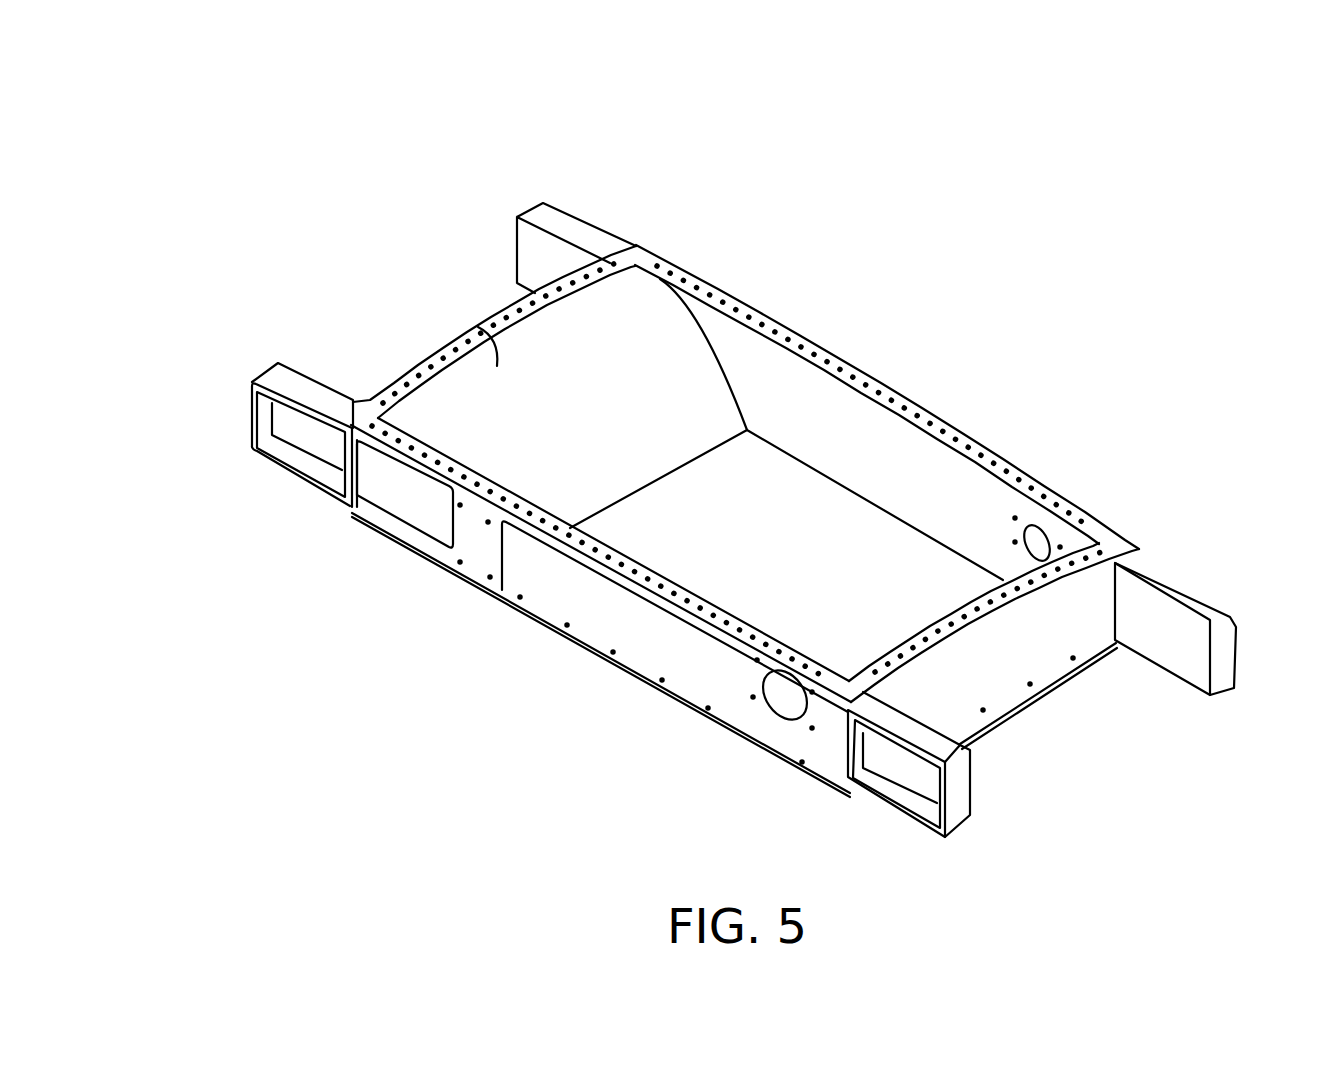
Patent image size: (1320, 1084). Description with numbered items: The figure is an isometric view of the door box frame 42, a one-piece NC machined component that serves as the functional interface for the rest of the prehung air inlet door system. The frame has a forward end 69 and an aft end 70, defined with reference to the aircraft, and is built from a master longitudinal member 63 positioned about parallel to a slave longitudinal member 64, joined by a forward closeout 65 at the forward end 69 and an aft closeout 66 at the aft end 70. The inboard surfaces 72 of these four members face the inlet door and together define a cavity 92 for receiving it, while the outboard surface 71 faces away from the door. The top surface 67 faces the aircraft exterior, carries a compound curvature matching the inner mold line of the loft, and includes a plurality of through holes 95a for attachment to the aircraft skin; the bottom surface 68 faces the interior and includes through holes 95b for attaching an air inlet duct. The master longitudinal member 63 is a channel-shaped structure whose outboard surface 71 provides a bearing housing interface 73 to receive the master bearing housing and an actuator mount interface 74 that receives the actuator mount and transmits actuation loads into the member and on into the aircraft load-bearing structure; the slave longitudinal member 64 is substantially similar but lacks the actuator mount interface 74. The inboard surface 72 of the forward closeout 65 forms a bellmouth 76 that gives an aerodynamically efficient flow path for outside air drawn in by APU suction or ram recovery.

The door box frame 42 is at (257, 212).
The master longitudinal member 63 is at (601, 607).
The slave longitudinal member 64 is at (854, 439).
The forward closeout 65 is at (494, 332).
The aft closeout 66 is at (994, 665).
The top surface 67 is at (923, 418).
The bottom surface 68 is at (1000, 723).
The forward end 69 is at (250, 413).
The aft end 70 is at (1227, 667).
The outboard surface 71 is at (647, 653).
The inboard surface 72 is at (653, 313).
The bearing housing interface 73 is at (757, 716).
The actuator mount interface 74 is at (447, 560).
The bellmouth 76 is at (478, 327).
The cavity 92 is at (722, 563).
The through holes 95a is at (393, 385).
The through holes 95b is at (802, 762).